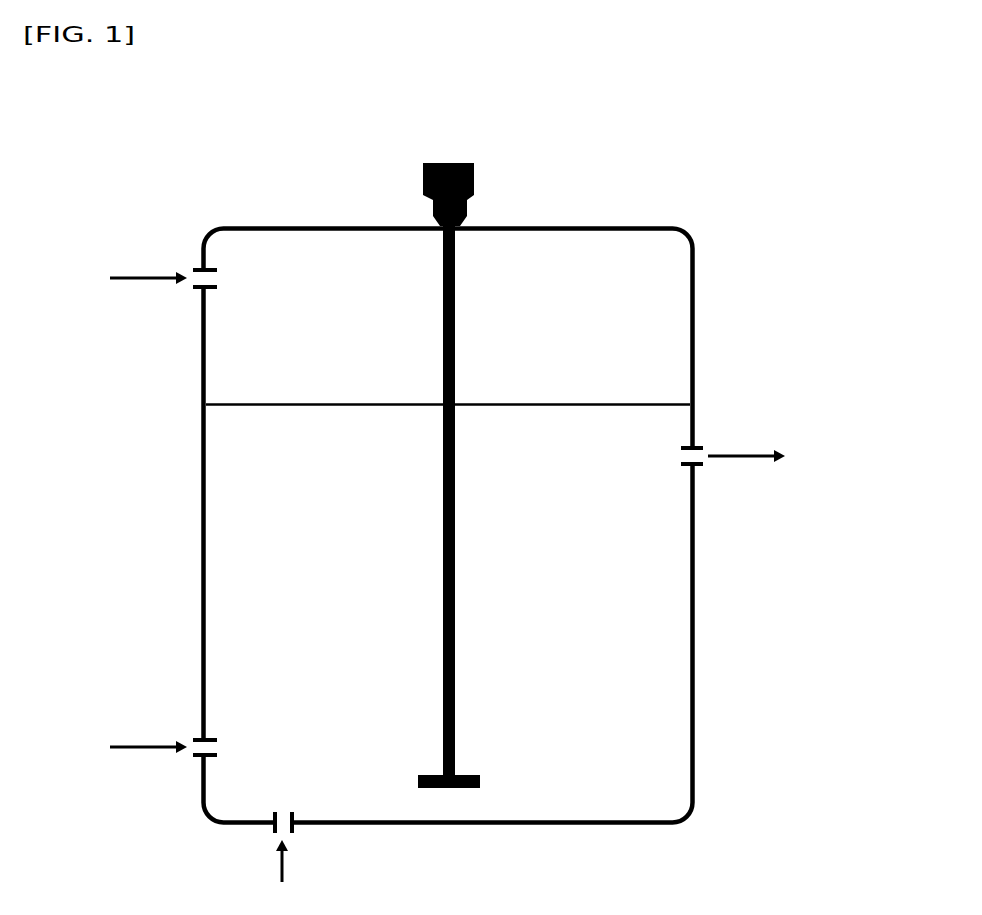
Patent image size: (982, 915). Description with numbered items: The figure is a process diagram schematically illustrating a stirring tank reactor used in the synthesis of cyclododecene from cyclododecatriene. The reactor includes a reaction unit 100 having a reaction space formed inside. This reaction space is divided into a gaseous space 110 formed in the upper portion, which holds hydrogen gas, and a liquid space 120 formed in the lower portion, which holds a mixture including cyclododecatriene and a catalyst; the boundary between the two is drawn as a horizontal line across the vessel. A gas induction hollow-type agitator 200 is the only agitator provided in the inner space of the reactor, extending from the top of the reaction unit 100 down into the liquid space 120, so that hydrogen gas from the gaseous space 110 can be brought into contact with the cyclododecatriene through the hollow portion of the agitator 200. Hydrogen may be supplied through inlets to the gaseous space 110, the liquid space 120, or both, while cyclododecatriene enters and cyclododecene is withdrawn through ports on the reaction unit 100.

The reaction unit 100 is at (347, 189).
The gaseous space 110 is at (607, 325).
The liquid space 120 is at (597, 672).
The agitator 200 is at (455, 307).